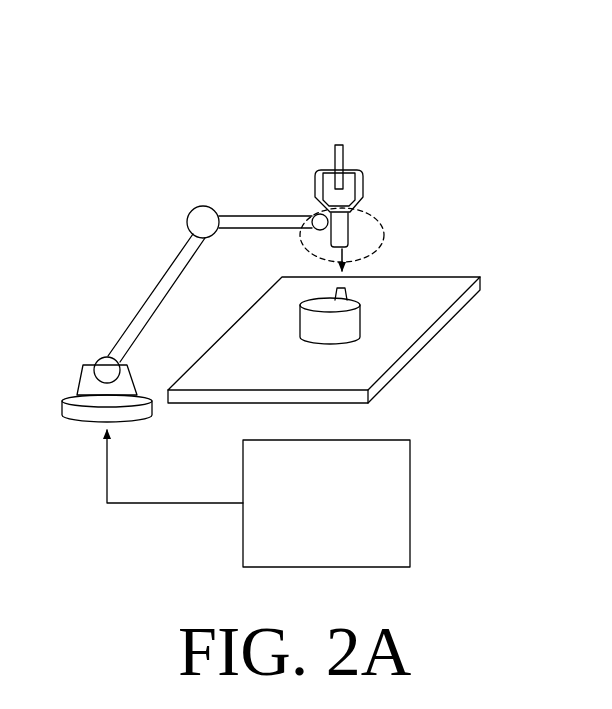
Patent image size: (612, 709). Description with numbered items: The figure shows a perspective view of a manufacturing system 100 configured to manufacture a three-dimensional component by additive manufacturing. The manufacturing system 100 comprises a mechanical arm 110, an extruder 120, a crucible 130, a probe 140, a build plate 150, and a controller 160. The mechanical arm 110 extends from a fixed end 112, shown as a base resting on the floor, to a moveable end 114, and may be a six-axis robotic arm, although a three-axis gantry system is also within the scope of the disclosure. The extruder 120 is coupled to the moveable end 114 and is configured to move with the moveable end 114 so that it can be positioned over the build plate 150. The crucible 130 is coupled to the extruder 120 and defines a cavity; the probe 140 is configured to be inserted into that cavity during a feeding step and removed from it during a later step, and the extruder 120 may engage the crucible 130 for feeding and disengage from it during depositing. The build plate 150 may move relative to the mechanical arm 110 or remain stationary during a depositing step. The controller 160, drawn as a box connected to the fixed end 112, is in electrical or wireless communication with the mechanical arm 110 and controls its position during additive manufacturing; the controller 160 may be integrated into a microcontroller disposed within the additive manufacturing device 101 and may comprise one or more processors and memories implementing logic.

The manufacturing system 100 is at (432, 121).
The mechanical arm 110 is at (145, 221).
The additive manufacturing device 101 is at (147, 300).
The fixed end 112 is at (72, 407).
The moveable end 114 is at (313, 215).
The crucible 130 is at (315, 177).
The probe 140 is at (338, 155).
The extruder 120 is at (351, 227).
The build plate 150 is at (449, 285).
The controller 160 is at (258, 498).